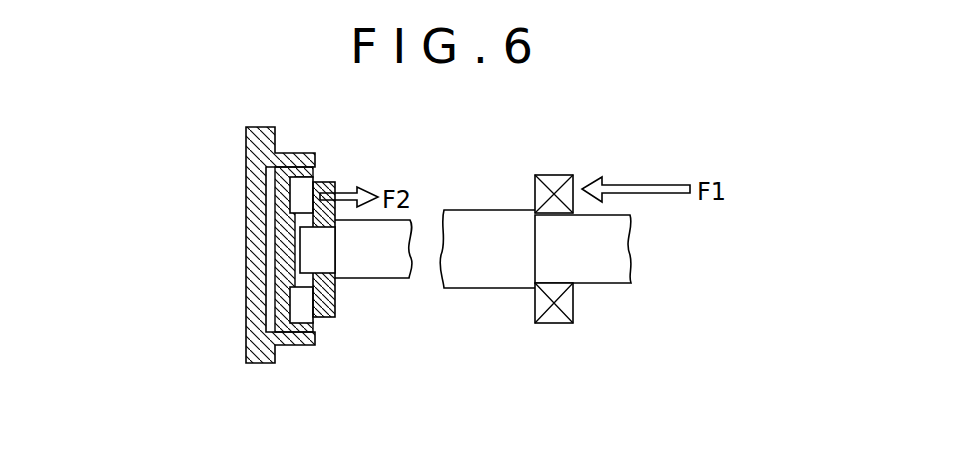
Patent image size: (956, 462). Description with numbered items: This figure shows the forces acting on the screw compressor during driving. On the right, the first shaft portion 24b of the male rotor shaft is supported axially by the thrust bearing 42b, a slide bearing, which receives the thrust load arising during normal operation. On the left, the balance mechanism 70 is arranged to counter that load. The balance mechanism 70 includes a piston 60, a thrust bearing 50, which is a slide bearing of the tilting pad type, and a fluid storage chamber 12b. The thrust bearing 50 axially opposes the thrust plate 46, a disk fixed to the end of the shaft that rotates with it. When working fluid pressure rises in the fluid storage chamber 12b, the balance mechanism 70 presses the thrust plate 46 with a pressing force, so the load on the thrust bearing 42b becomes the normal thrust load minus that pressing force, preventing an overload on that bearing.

The balance mechanism 70 is at (214, 168).
The fluid storage chamber 12b is at (272, 290).
The piston 60 is at (297, 340).
The thrust plate 46 is at (336, 297).
The thrust bearing 50 is at (320, 318).
The first shaft portion 24b is at (620, 300).
The thrust bearing 42b is at (554, 316).